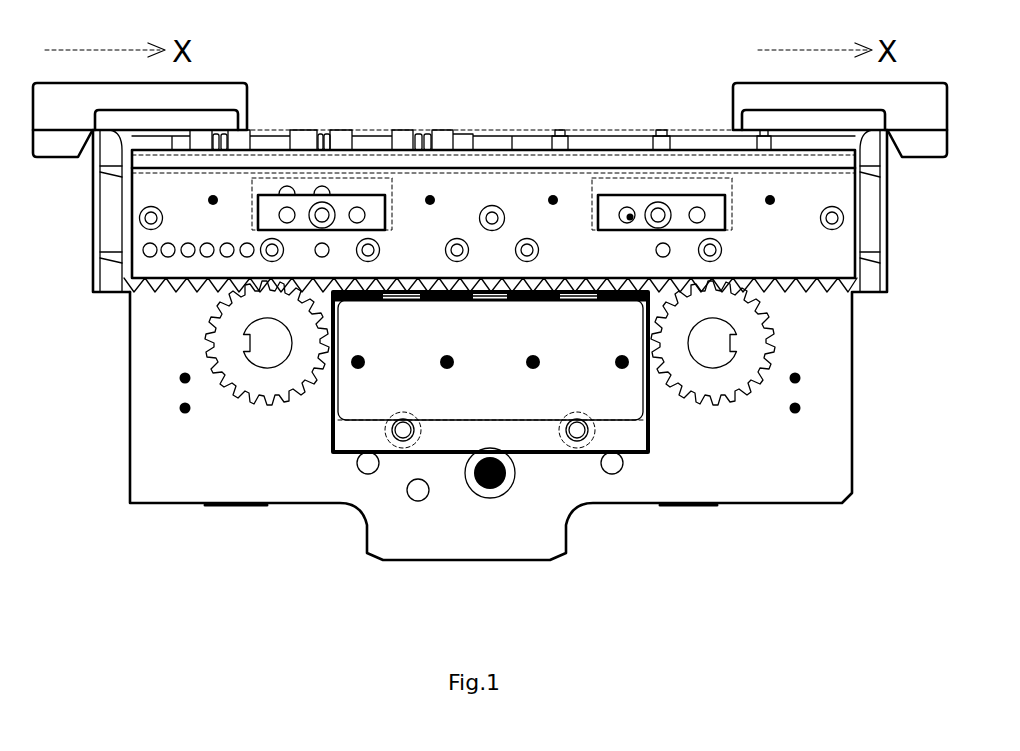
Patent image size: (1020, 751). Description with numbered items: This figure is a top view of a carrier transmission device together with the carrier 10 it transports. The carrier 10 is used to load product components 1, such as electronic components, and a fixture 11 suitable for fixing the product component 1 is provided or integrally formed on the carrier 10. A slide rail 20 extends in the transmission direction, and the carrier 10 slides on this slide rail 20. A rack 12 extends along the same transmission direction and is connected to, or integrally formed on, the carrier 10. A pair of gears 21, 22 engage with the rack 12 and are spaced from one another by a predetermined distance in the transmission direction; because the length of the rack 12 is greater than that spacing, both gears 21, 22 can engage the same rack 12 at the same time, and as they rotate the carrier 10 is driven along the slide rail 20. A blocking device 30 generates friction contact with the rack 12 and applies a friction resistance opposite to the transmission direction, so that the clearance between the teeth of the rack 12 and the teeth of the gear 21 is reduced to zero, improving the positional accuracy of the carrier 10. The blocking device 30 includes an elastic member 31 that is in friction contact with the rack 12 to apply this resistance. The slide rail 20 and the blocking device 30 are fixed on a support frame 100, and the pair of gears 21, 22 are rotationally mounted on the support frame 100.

The product component 1 is at (298, 134).
The carrier 10 is at (492, 183).
The fixture 11 is at (556, 136).
The rack 12 is at (148, 292).
The slide rail 20 is at (112, 220).
The gear 21 is at (257, 385).
The gear 22 is at (745, 385).
The blocking device 30 is at (470, 398).
The elastic member 31 is at (430, 305).
The support frame 100 is at (160, 480).